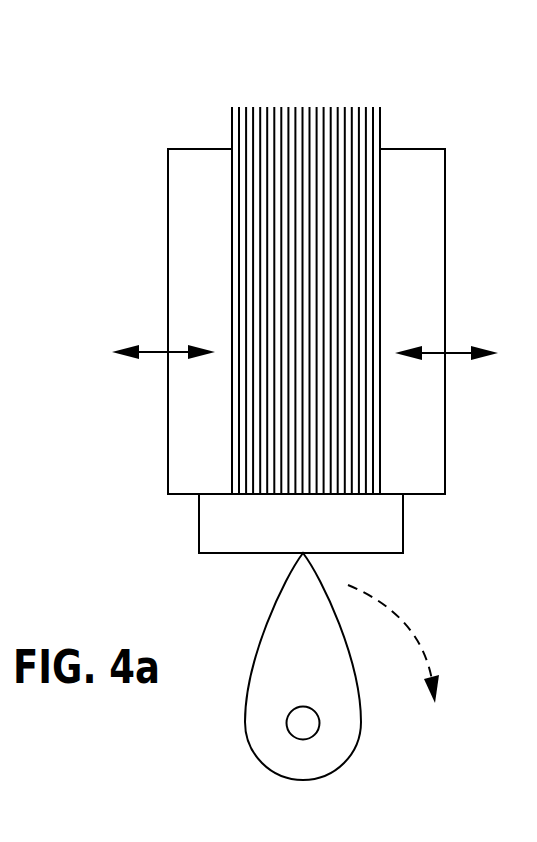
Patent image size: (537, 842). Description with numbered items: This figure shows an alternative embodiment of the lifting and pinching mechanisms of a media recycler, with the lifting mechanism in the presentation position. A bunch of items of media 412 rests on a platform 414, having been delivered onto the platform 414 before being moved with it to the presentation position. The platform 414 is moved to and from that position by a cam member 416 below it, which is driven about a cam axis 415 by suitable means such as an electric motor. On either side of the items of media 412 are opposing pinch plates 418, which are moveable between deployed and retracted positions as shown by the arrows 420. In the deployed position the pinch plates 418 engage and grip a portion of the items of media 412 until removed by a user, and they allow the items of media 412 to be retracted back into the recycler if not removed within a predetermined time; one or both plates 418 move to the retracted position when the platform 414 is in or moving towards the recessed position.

The items of media 412 is at (318, 107).
The platform 414 is at (199, 532).
The cam axis 415 is at (317, 733).
The cam member 416 is at (248, 747).
The pinch plates 418 is at (168, 193).
The arrows 420 is at (153, 356).